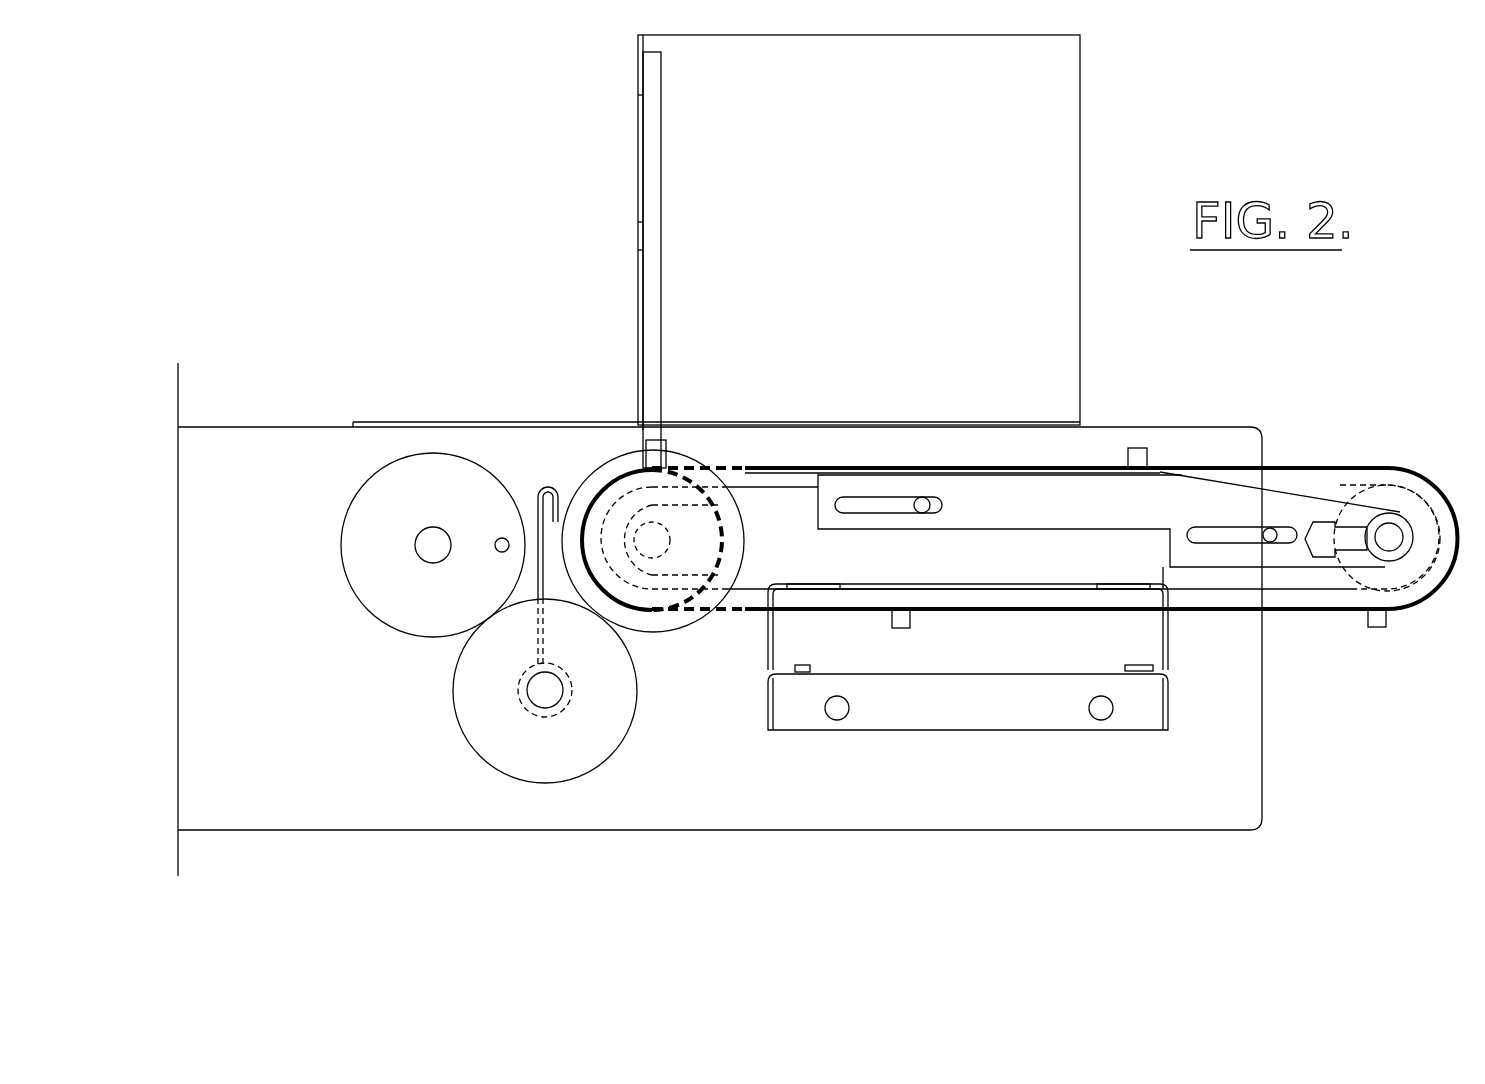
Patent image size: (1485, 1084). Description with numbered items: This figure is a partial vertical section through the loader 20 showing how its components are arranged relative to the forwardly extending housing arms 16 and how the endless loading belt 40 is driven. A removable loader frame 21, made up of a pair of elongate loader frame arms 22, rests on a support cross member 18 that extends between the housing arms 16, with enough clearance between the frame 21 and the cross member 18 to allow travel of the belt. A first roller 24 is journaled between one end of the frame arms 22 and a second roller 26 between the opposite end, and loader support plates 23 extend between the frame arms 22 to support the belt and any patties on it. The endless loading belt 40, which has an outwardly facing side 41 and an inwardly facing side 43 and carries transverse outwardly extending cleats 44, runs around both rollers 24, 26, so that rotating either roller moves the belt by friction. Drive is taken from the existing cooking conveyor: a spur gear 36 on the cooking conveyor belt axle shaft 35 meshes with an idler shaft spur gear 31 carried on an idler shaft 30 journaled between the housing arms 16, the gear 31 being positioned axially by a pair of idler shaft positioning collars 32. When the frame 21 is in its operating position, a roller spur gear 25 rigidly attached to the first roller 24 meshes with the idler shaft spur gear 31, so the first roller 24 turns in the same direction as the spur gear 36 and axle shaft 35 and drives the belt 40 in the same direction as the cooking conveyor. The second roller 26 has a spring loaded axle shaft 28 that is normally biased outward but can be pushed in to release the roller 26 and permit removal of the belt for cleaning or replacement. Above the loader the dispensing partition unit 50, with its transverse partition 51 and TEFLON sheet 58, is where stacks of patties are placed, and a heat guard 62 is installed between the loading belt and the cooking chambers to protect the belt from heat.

The forwardly extending housing arms 16 is at (314, 803).
The support cross member 18 is at (968, 725).
The loader 20 is at (1394, 728).
The loader frame 21 is at (1109, 479).
The loader frame arms 22 is at (1332, 593).
The loader support plates 23 is at (1280, 451).
The first roller 24 is at (716, 529).
The roller spur gear 25 is at (649, 501).
The second roller 26 is at (1394, 501).
The spring loaded axle shaft 28 is at (1419, 498).
The idler shaft 30 is at (503, 731).
The idler shaft spur gear 31 is at (478, 727).
The idler shaft positioning collars 32 is at (560, 708).
The cooking conveyor belt axle shaft 35 is at (404, 468).
The conveyor belt axle shaft spur gear 36 is at (378, 520).
The endless loading belt 40 is at (1019, 498).
The outwardly facing side 41 is at (1020, 578).
The inwardly facing side 43 is at (968, 609).
The cleats 44 is at (1181, 417).
The dispensing partition unit 50 is at (791, 230).
The transverse partition 51 is at (591, 232).
The TEFLON sheet 58 is at (687, 260).
The heat guard 62 is at (537, 635).